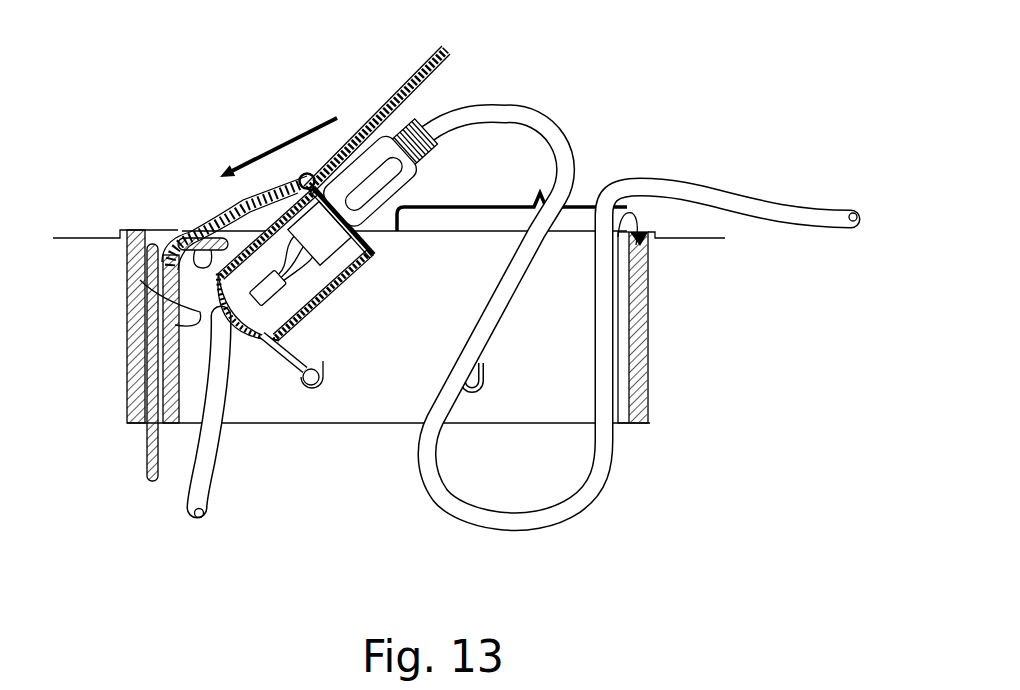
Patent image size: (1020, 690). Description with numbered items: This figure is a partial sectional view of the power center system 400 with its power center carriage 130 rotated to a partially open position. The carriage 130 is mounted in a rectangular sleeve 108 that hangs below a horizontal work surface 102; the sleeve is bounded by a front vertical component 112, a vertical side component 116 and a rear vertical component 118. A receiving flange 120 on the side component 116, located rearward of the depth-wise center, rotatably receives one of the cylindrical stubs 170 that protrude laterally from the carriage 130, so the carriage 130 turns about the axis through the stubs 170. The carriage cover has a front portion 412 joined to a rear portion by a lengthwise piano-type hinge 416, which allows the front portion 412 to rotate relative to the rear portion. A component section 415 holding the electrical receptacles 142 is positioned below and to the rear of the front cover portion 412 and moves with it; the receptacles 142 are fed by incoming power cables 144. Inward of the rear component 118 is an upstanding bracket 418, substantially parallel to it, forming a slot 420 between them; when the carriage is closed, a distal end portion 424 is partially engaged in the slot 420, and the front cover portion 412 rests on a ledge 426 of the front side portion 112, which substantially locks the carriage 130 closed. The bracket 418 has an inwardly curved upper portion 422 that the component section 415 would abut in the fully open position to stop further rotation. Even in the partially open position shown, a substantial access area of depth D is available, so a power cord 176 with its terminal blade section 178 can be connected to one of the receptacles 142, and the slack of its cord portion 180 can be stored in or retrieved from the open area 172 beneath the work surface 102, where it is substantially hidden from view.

The work surface 102 is at (690, 238).
The rectangular sleeve 108 is at (668, 322).
The front vertical component 112 is at (655, 402).
The vertical side component 116 is at (245, 430).
The rear vertical component 118 is at (125, 396).
The receiving flange 120 is at (333, 390).
The power center carriage 130 is at (460, 82).
The electrical receptacle 142 is at (322, 232).
The incoming power cable 144 is at (212, 490).
The stub 170 is at (304, 393).
The open area 172 is at (531, 396).
The power cord 176 is at (700, 148).
The terminal blade section 178 is at (390, 226).
The cord portion 180 is at (578, 509).
The power center system 400 is at (607, 66).
The front portion 412 is at (398, 92).
The component section 415 is at (357, 291).
The piano-type hinge 416 is at (308, 172).
The upstanding bracket 418 is at (198, 328).
The slot 420 is at (153, 236).
The upper portion 422 is at (160, 238).
The distal end portion 424 is at (146, 474).
The ledge 426 is at (633, 236).